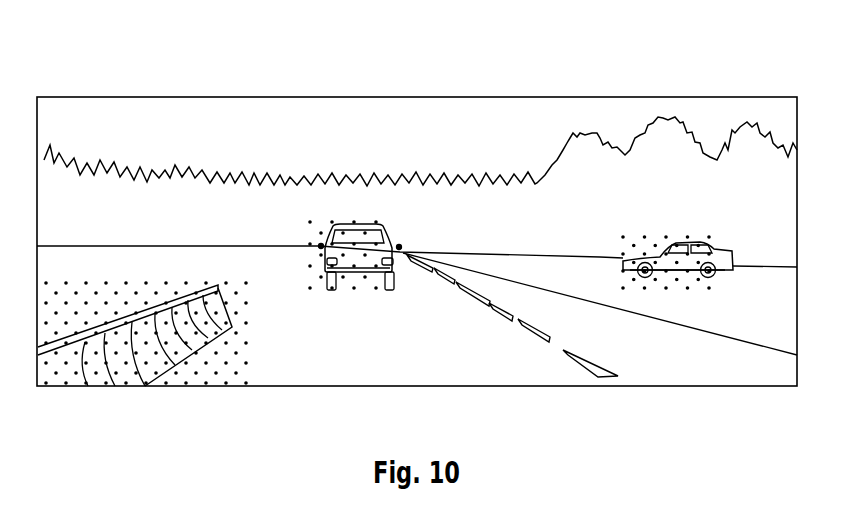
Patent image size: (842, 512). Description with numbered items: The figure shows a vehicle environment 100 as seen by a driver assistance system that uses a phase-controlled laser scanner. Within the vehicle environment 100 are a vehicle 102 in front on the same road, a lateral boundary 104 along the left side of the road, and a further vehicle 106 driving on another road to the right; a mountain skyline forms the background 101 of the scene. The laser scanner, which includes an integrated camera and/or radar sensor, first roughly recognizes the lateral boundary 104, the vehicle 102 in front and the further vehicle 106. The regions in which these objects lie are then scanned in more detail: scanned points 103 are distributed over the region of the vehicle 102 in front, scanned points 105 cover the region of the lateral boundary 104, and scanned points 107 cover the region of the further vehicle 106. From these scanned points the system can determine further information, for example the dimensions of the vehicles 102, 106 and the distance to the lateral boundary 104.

The vehicle environment 100 is at (635, 97).
The background scenery (mountain skyline) 101 is at (735, 148).
The vehicle in front 102 is at (367, 224).
The scanned points 103 is at (400, 221).
The lateral boundary 104 is at (165, 302).
The scanned points 105 is at (267, 317).
The further vehicle 106 is at (698, 242).
The scanned points 107 is at (735, 265).